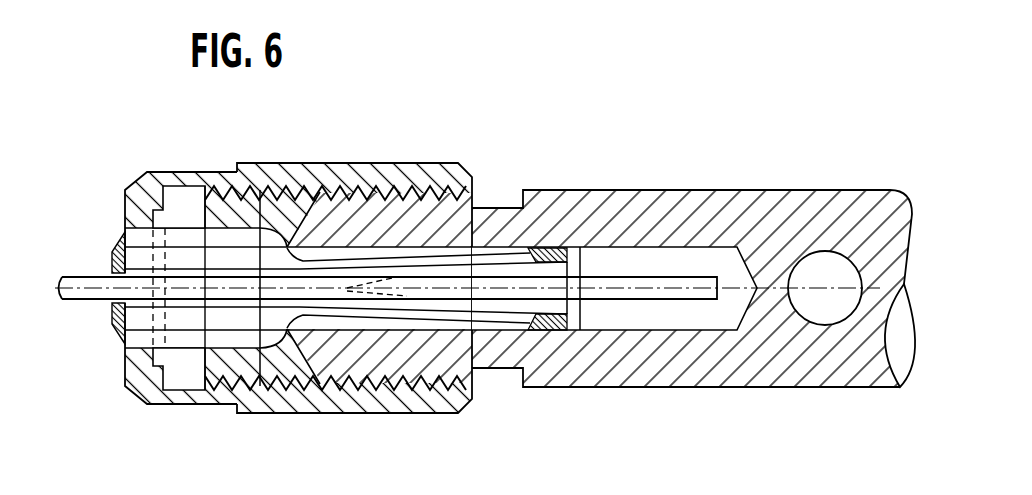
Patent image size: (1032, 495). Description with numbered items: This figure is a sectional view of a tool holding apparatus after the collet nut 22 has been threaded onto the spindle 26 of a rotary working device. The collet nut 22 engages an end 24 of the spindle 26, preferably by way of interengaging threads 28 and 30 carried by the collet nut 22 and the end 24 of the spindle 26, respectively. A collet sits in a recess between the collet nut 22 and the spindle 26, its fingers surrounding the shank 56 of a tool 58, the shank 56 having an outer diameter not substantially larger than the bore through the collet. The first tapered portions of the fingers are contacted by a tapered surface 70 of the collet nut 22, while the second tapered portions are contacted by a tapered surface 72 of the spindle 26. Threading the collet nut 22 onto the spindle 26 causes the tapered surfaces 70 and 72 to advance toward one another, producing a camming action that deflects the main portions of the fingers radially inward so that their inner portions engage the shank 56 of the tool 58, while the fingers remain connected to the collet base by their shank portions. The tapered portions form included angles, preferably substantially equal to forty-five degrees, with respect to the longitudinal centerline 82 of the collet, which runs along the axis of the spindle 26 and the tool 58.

The collet nut 22 is at (198, 405).
The end of spindle 24 is at (237, 170).
The spindle 26 is at (633, 190).
The threads of collet nut 28 is at (412, 190).
The threads of spindle end 30 is at (407, 386).
The shank of tool 56 is at (116, 301).
The tool 58 is at (80, 275).
The tapered surface of collet nut 70 is at (125, 232).
The tapered surface of spindle 72 is at (302, 203).
The longitudinal centerline 82 is at (682, 283).